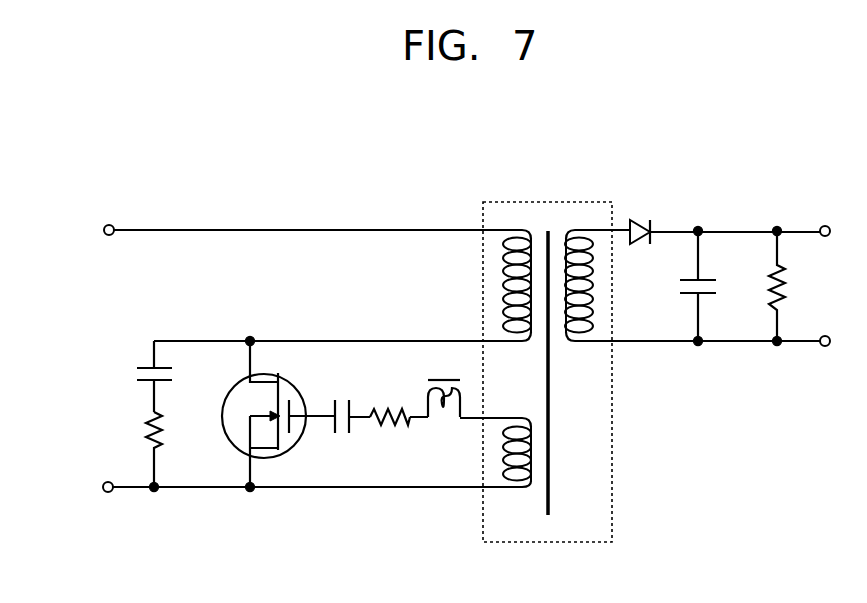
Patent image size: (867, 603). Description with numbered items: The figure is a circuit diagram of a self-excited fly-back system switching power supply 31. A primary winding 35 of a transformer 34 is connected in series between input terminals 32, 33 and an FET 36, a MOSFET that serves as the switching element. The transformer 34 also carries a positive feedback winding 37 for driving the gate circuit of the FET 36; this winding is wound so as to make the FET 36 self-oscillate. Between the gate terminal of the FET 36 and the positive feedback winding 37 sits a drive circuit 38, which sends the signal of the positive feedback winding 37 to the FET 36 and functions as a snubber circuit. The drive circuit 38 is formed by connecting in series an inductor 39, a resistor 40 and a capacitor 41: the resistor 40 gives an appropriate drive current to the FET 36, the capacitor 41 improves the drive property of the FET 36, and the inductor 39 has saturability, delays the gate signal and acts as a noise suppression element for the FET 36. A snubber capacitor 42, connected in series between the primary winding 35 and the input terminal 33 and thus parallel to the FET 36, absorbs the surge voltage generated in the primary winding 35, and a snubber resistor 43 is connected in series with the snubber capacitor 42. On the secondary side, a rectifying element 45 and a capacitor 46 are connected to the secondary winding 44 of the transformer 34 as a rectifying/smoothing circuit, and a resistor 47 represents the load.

The switching power supply 31 is at (287, 192).
The input terminal 32 is at (106, 224).
The input terminal 33 is at (106, 481).
The transformer 34 is at (484, 200).
The primary winding 35 is at (503, 285).
The FET 36 is at (224, 402).
The positive feedback winding 37 is at (532, 450).
The drive circuit 38 is at (450, 524).
The inductor 39 is at (443, 412).
The resistor 40 is at (388, 425).
The capacitor 41 is at (340, 437).
The snubber capacitor 42 is at (137, 368).
The snubber resistor 43 is at (147, 432).
The secondary winding 44 is at (592, 287).
The rectifying element 45 is at (640, 222).
The capacitor 46 is at (716, 280).
The resistor 47 is at (786, 302).